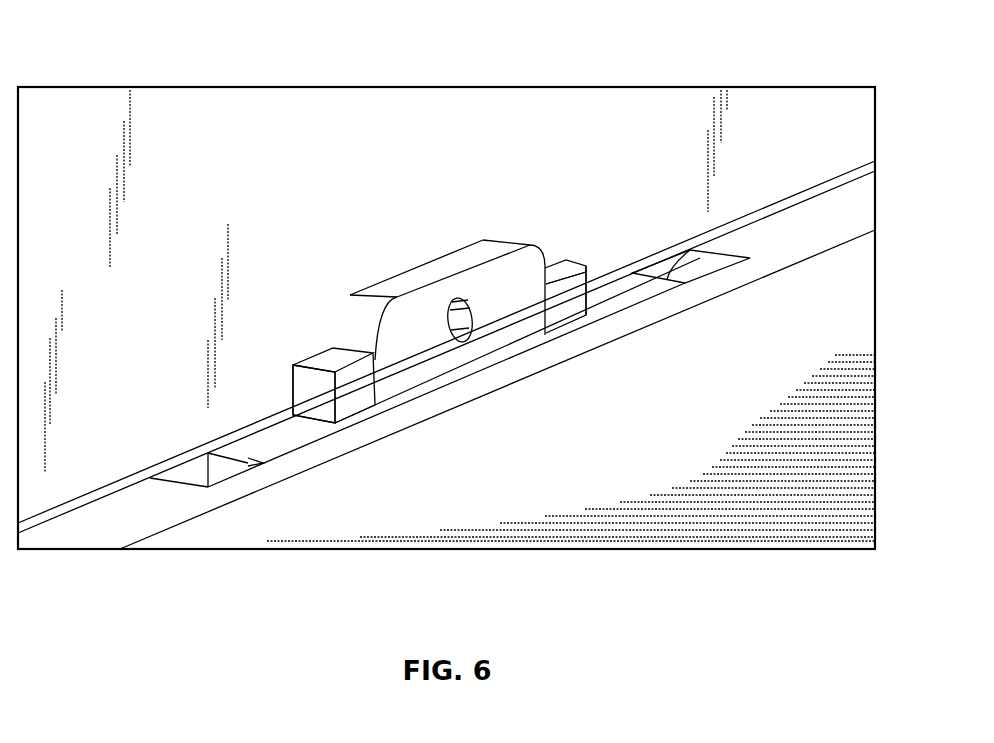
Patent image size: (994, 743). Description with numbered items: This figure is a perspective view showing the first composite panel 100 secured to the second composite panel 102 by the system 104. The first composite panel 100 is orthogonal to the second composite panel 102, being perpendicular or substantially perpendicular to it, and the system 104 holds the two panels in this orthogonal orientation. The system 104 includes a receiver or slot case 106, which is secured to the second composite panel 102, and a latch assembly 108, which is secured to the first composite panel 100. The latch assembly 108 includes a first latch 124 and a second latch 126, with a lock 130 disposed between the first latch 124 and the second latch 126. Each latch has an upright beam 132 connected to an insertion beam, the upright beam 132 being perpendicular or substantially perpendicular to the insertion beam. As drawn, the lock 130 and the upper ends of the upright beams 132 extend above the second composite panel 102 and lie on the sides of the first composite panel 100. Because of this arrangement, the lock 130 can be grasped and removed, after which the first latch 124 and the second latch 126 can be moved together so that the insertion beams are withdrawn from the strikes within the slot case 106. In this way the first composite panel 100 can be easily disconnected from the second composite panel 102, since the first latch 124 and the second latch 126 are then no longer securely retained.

The first composite panel 100 is at (640, 116).
The second composite panel 102 is at (818, 322).
The system 104 is at (410, 161).
The slot case 106 is at (123, 513).
The latch assembly 108 is at (462, 223).
The first latch 124 is at (320, 360).
The second latch 126 is at (572, 265).
The lock 130 is at (392, 290).
The upright beam 132 is at (345, 358).